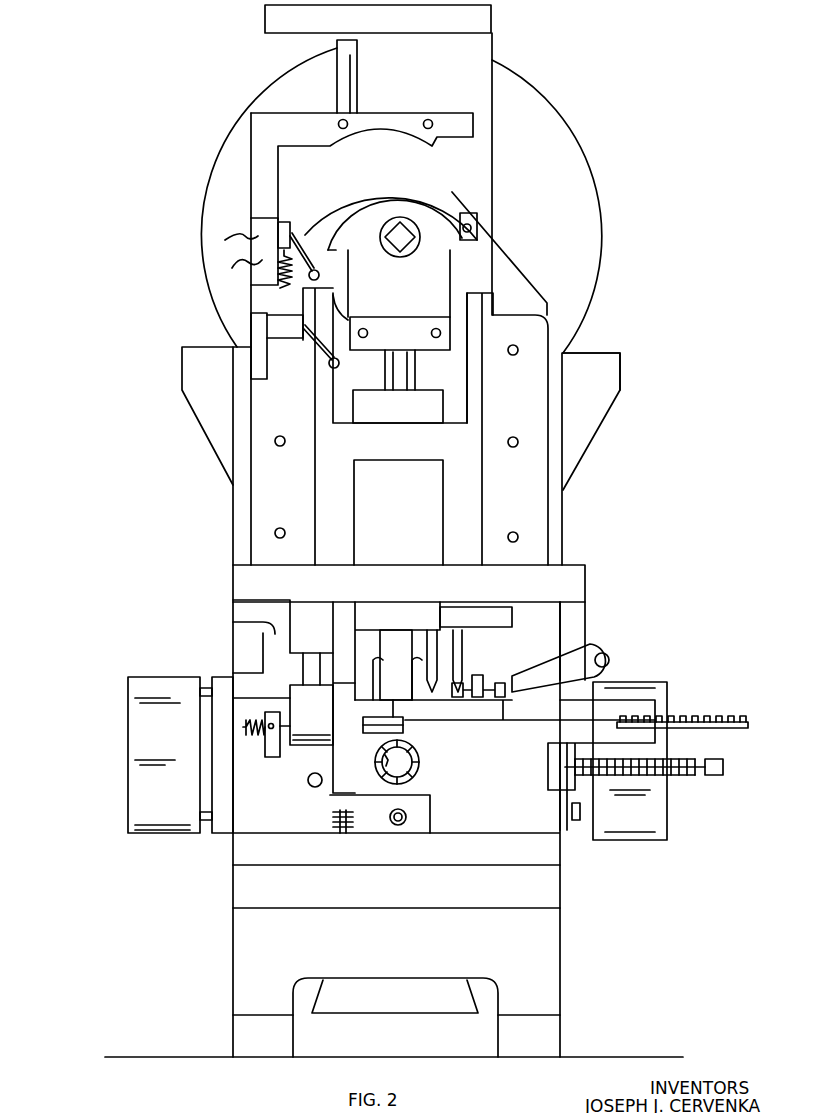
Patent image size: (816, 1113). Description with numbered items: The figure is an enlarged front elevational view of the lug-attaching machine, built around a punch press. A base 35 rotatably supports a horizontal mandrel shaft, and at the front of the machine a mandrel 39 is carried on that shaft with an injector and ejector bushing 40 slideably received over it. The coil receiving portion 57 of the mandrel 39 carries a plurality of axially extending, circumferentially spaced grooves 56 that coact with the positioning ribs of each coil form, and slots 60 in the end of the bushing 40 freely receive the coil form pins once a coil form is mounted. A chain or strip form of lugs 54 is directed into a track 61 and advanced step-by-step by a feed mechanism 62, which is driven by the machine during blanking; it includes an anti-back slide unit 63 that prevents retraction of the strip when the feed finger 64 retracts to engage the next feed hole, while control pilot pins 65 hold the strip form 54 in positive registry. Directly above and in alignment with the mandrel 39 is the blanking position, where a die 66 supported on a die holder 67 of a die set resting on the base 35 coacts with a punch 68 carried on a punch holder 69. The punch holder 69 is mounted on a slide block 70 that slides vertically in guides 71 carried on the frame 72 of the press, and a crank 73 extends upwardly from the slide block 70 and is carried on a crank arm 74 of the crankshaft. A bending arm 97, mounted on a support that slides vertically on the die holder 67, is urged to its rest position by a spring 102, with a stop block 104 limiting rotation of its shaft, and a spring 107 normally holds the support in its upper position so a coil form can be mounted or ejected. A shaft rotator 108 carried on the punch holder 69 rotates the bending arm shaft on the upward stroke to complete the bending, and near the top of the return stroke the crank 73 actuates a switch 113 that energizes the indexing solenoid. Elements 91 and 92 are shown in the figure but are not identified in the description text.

The base 35 is at (222, 966).
The mandrel 39 is at (400, 775).
The injector and ejector bushing 40 is at (378, 785).
The chain or strip form of lugs 54 is at (735, 718).
The grooves 56 is at (420, 770).
The coil receiving portion 57 is at (340, 763).
The slots 60 is at (375, 762).
The track 61 is at (588, 712).
The feed mechanism 62 is at (608, 648).
The anti-back slide unit 63 is at (480, 678).
The feed finger 64 is at (575, 650).
The control pilot pins 65 is at (455, 645).
The die 66 is at (398, 717).
The die holder 67 is at (268, 820).
The punch 68 is at (392, 640).
The punch holder 69 is at (492, 502).
The slide block 70 is at (478, 350).
The guides 71 is at (262, 440).
The frame 72 is at (612, 388).
The crank 73 is at (440, 285).
The crank arm 74 is at (408, 237).
The motor 91 is at (650, 812).
The clutch bracket 92 is at (268, 365).
The bending arm 97 is at (372, 720).
The spring 102 is at (255, 718).
The stop block 104 is at (270, 757).
The spring 107 is at (340, 838).
The shaft rotator 108 is at (300, 690).
The switch 113 is at (292, 225).